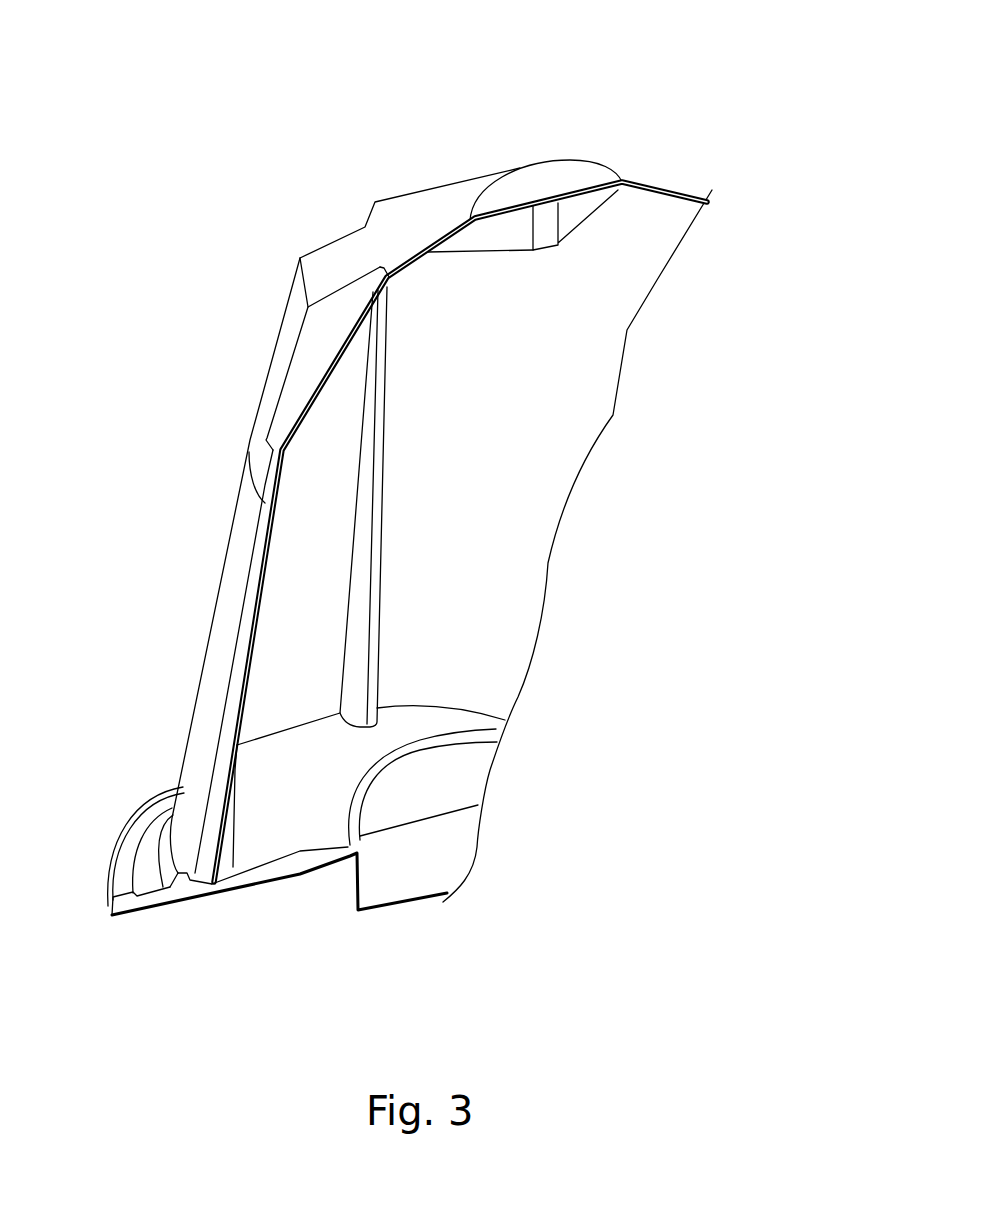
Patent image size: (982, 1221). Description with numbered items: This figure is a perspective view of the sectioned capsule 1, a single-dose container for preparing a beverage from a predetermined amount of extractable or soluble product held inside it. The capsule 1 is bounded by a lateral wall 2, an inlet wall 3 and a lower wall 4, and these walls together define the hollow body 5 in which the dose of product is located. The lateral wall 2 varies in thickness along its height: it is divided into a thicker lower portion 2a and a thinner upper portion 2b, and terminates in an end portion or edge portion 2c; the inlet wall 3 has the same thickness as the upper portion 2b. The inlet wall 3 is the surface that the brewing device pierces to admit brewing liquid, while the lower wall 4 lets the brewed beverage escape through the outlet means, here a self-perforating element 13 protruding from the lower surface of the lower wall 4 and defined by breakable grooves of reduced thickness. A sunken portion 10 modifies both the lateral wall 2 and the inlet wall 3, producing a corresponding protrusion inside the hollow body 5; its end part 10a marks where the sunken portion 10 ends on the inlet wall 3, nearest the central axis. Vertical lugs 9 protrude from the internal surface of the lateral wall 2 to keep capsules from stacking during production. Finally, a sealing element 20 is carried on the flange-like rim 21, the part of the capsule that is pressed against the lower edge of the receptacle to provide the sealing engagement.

The capsule 1 is at (738, 129).
The lateral wall 2 is at (192, 637).
The lower portion of the lateral wall 2a is at (205, 715).
The upper portion of the lateral wall 2b is at (280, 358).
The end portion of the lateral wall 2c is at (297, 282).
The inlet wall 3 is at (457, 194).
The lower wall 4 is at (287, 893).
The hollow body 5 is at (552, 381).
The vertical lugs 9 is at (363, 473).
The sunken portion 10 is at (345, 294).
The end part of the sunken portion 10a is at (388, 260).
The self-perforating element 13 is at (497, 835).
The sealing element 20 is at (178, 884).
The flange-like rim 21 is at (140, 934).